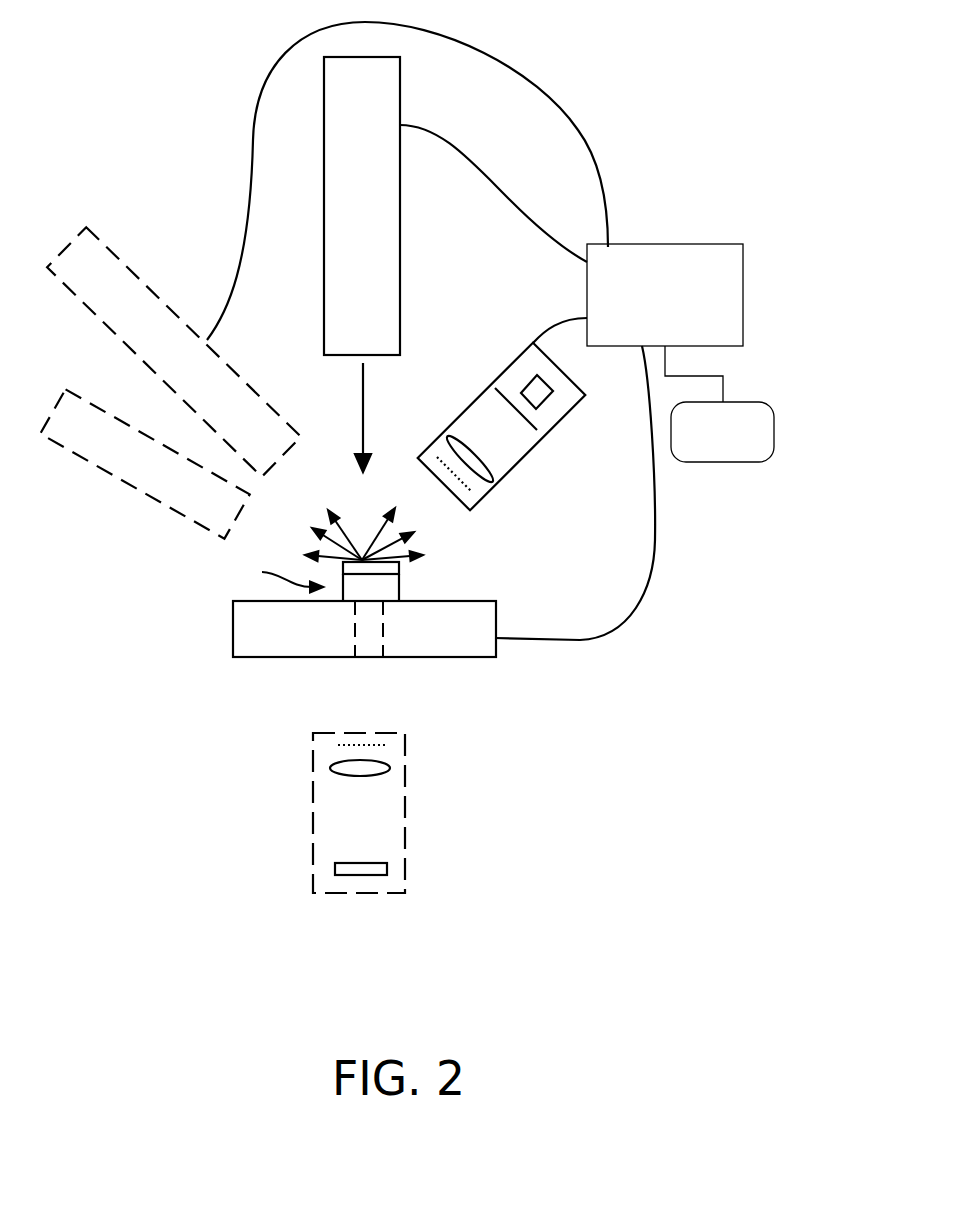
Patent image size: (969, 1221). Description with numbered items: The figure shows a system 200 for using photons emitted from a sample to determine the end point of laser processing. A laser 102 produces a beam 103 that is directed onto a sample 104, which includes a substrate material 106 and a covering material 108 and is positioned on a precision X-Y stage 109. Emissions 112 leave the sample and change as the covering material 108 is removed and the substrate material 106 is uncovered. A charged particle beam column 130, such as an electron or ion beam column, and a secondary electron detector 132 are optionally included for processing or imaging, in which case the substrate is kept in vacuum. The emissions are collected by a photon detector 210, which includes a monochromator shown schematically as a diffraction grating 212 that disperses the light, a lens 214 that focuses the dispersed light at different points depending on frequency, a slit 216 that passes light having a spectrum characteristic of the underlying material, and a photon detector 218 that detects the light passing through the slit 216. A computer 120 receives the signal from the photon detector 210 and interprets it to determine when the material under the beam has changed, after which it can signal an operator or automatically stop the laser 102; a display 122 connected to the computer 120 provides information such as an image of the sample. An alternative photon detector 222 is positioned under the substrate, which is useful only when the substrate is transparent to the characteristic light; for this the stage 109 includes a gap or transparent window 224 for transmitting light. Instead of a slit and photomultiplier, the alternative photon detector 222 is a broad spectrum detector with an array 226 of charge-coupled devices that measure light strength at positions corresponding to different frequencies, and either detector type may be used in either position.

The system 200 is at (222, 198).
The laser 102 is at (400, 245).
The beam 103 is at (363, 383).
The charged particle beam column 130 is at (233, 373).
The secondary electron detector 132 is at (147, 497).
The computer 120 is at (682, 244).
The display 122 is at (737, 402).
The photon detector 210 is at (510, 365).
The photon detector 218 is at (545, 383).
The slit 216 is at (530, 423).
The lens 214 is at (493, 482).
The diffraction grating 212 is at (472, 492).
The emissions 112 is at (331, 527).
The covering material 108 is at (400, 567).
The substrate material 106 is at (401, 593).
The sample 104 is at (274, 579).
The stage 109 is at (496, 613).
The gap or transparent window 224 is at (372, 657).
The alternative photon detector 222 is at (407, 860).
The array of charge-coupled devices 226 is at (335, 869).